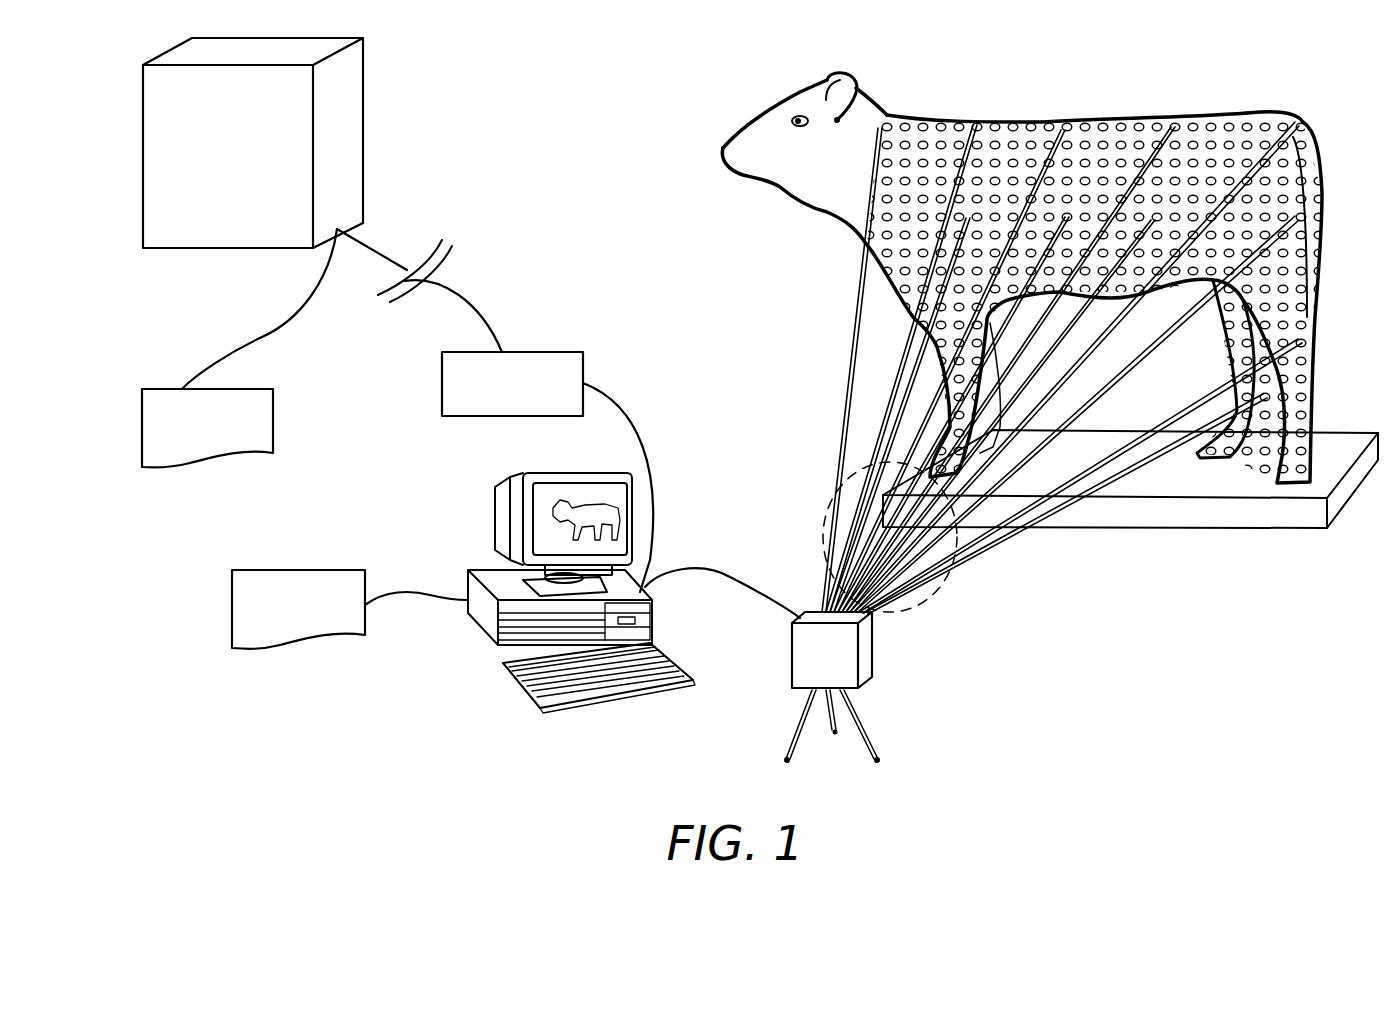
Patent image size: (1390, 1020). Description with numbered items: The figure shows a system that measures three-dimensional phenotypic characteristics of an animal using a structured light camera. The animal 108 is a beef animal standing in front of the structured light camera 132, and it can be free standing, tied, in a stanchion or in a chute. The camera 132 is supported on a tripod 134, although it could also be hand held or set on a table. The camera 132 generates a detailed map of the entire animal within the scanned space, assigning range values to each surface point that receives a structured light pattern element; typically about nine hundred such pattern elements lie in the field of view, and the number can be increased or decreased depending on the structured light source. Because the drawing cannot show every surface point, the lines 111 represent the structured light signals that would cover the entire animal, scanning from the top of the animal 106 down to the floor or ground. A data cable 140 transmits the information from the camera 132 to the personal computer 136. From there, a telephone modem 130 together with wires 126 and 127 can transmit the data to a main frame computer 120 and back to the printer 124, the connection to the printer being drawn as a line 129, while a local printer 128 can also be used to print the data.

The top of the animal 106 is at (1022, 268).
The animal 108 is at (873, 105).
The lines 111 is at (950, 605).
The main frame computer 120 is at (364, 122).
The printer 124 is at (273, 440).
The wire 126 is at (652, 500).
The wire 127 is at (372, 240).
The local printer 128 is at (250, 570).
The line between main frame computer and printer 129 is at (263, 338).
The telephone modem 130 is at (545, 352).
The structured light camera 132 is at (865, 658).
The tripod 134 is at (793, 737).
The personal computer 136 is at (472, 570).
The data cable 140 is at (745, 578).